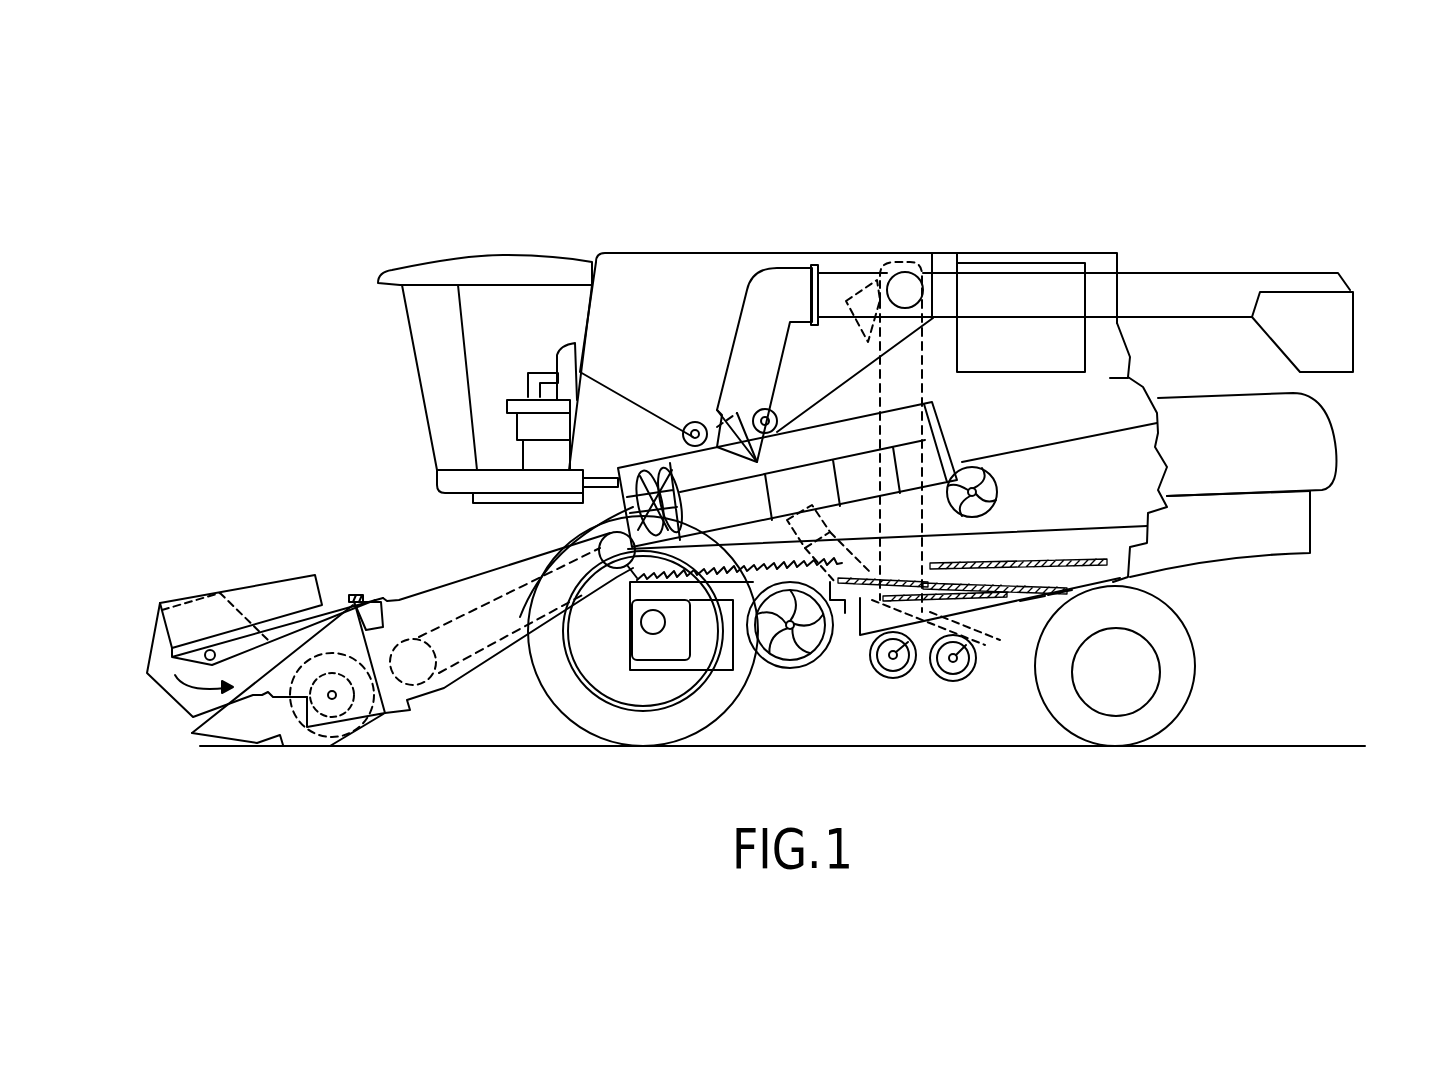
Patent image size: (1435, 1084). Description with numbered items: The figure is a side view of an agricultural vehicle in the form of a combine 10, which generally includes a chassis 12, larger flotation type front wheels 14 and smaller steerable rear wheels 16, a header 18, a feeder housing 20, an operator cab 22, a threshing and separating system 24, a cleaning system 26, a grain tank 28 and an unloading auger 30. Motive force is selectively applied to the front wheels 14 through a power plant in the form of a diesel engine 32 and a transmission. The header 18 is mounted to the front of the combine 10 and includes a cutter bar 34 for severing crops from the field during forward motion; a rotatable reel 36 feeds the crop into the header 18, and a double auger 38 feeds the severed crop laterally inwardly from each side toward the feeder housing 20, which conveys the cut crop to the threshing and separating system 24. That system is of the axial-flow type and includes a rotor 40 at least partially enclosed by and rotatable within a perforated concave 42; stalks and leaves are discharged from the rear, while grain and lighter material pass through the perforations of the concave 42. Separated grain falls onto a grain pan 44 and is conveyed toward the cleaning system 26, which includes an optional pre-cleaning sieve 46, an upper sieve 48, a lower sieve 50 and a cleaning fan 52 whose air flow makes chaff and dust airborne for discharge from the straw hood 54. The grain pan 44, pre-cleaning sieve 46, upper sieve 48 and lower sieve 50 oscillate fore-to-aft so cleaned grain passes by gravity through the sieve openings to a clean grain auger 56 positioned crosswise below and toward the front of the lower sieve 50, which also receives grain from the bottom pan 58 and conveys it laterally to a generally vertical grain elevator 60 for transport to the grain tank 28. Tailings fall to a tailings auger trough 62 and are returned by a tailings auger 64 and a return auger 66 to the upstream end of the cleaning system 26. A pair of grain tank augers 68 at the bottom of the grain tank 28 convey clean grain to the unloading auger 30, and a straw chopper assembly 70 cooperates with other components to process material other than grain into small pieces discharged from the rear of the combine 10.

The combine 10 is at (474, 240).
The chassis 12 is at (1097, 590).
The front wheels 14 is at (560, 705).
The rear wheels 16 is at (1190, 686).
The header 18 is at (246, 578).
The feeder housing 20 is at (447, 582).
The operator cab 22 is at (413, 355).
The threshing and separating system 24 is at (562, 514).
The cleaning system 26 is at (850, 692).
The grain tank 28 is at (640, 265).
The unloading auger 30 is at (1202, 282).
The diesel engine 32 is at (1013, 263).
The cutter bar 34 is at (280, 735).
The reel 36 is at (152, 650).
The double auger 38 is at (331, 717).
The rotor 40 is at (638, 470).
The concave 42 is at (828, 452).
The grain pan 44 is at (630, 585).
The pre-cleaning sieve 46 is at (940, 568).
The upper sieve 48 is at (1033, 568).
The lower sieve 50 is at (1000, 600).
The cleaning fan 52 is at (790, 650).
The straw hood 54 is at (1317, 437).
The clean grain auger 56 is at (895, 680).
The bottom pan 58 is at (1030, 603).
The grain elevator 60 is at (928, 378).
The tailings auger trough 62 is at (1035, 602).
The tailings auger 64 is at (953, 683).
The return auger 66 is at (868, 558).
The grain tank augers 68 is at (690, 421).
The straw chopper assembly 70 is at (1230, 463).